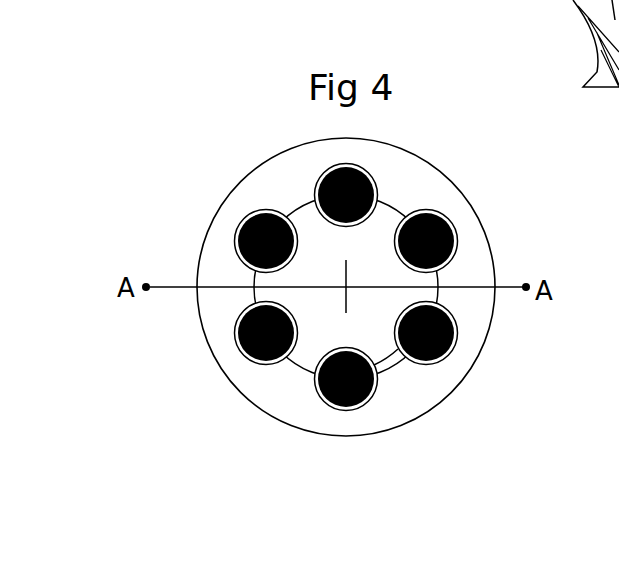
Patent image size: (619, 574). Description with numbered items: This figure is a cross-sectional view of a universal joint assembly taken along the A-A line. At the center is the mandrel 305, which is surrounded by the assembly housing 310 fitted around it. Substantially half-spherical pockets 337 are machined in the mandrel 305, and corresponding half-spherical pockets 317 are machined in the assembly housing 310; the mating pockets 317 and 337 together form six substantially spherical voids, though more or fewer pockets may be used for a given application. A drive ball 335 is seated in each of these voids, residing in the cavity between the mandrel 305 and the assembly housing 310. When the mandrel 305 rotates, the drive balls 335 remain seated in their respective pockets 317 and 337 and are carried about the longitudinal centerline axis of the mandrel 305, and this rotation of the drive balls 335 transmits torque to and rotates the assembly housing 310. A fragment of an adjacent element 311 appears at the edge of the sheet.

The mandrel 305 is at (307, 220).
The assembly housing 310 is at (403, 173).
The housing wall 311 is at (618, 177).
The pockets 317 is at (333, 412).
The drive balls 335 is at (458, 332).
The pockets 337 is at (360, 348).